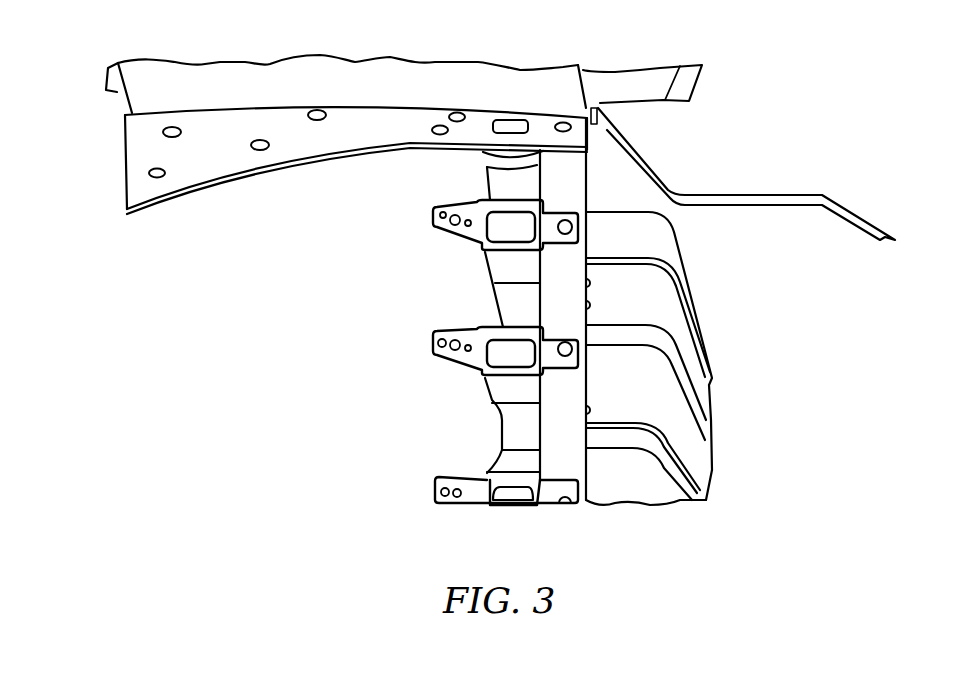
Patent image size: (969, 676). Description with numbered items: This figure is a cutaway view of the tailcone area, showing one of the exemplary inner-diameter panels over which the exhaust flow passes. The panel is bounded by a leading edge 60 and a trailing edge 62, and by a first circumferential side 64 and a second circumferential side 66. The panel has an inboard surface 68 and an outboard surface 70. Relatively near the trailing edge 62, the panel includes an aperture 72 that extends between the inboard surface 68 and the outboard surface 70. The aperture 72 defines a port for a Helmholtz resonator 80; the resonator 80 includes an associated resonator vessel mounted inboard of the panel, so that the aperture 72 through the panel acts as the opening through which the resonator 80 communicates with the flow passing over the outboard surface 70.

The leading edge 60 is at (125, 160).
The trailing edge 62 is at (593, 133).
The first circumferential side 64 is at (387, 108).
The second circumferential side 66 is at (240, 163).
The inboard surface 68 is at (340, 153).
The outboard surface 70 is at (347, 120).
The aperture 72 is at (513, 120).
The Helmholtz resonator 80 is at (653, 238).